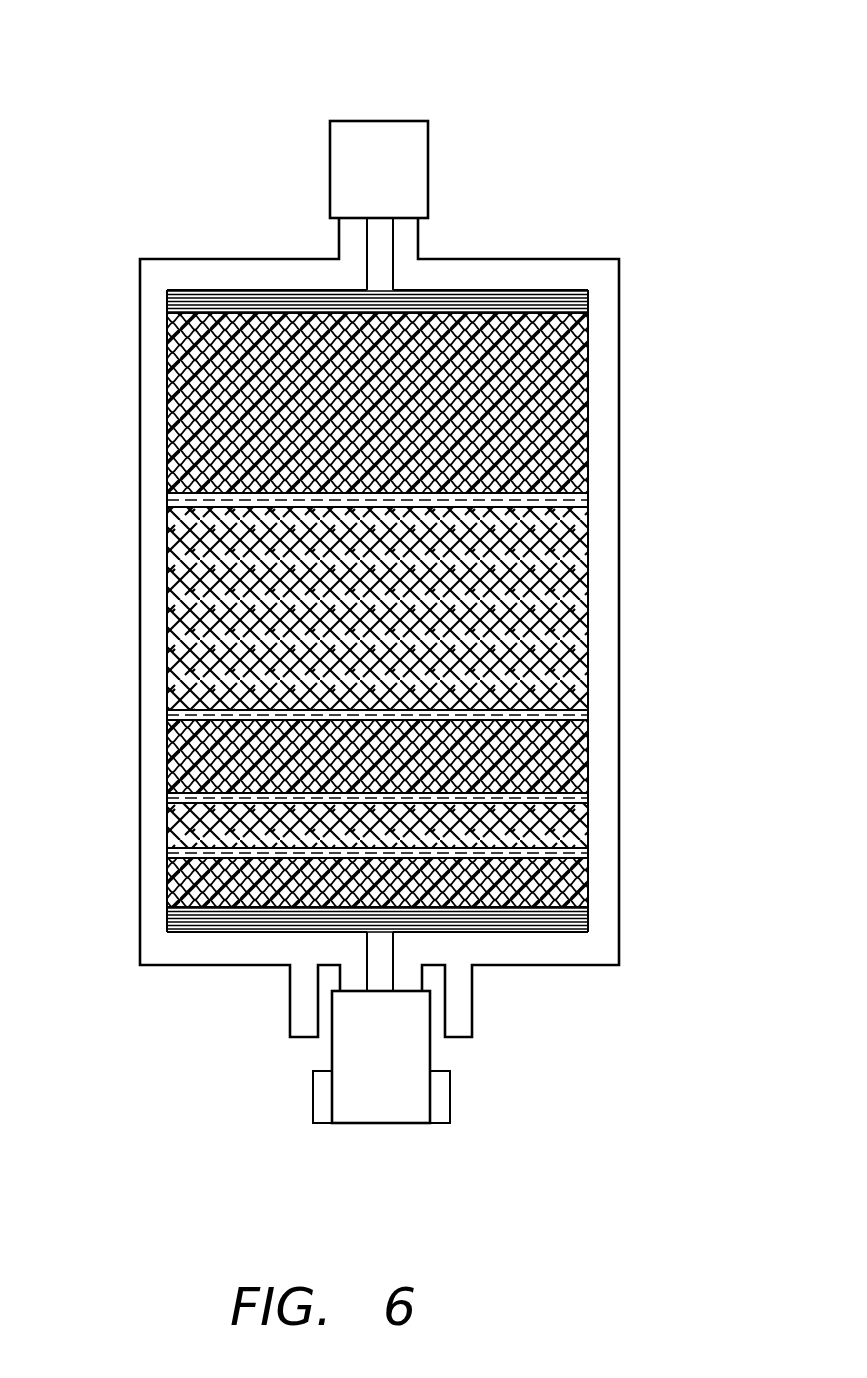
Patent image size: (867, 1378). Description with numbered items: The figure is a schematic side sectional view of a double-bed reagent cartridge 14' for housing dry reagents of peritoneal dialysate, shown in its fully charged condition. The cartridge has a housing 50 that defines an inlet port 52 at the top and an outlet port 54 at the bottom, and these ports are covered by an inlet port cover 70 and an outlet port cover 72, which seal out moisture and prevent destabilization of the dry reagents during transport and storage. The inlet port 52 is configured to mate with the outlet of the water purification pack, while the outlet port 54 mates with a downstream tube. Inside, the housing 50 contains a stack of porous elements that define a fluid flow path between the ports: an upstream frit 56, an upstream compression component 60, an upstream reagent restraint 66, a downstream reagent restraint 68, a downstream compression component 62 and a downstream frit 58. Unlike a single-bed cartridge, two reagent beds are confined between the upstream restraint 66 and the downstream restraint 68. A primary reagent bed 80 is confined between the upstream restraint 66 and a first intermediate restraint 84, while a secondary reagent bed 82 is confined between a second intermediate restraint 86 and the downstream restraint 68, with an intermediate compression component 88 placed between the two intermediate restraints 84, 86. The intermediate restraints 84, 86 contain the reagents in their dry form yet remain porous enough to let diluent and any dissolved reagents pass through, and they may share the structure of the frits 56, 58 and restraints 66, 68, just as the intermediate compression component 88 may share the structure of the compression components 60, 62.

The double-bed reagent cartridge 14' is at (394, 561).
The housing 50 is at (613, 521).
The inlet port 52 is at (382, 251).
The outlet port 54 is at (378, 967).
The upstream frit 56 is at (220, 297).
The downstream frit 58 is at (588, 923).
The upstream compression component 60 is at (190, 365).
The downstream compression component 62 is at (588, 880).
The upstream reagent restraint 66 is at (187, 492).
The downstream reagent restraint 68 is at (588, 843).
The inlet port cover 70 is at (350, 155).
The outlet port cover 72 is at (393, 1053).
The primary reagent bed 80 is at (185, 568).
The secondary reagent bed 82 is at (185, 820).
The first intermediate restraint 84 is at (168, 708).
The second intermediate restraint 86 is at (180, 795).
The intermediate compression component 88 is at (180, 750).